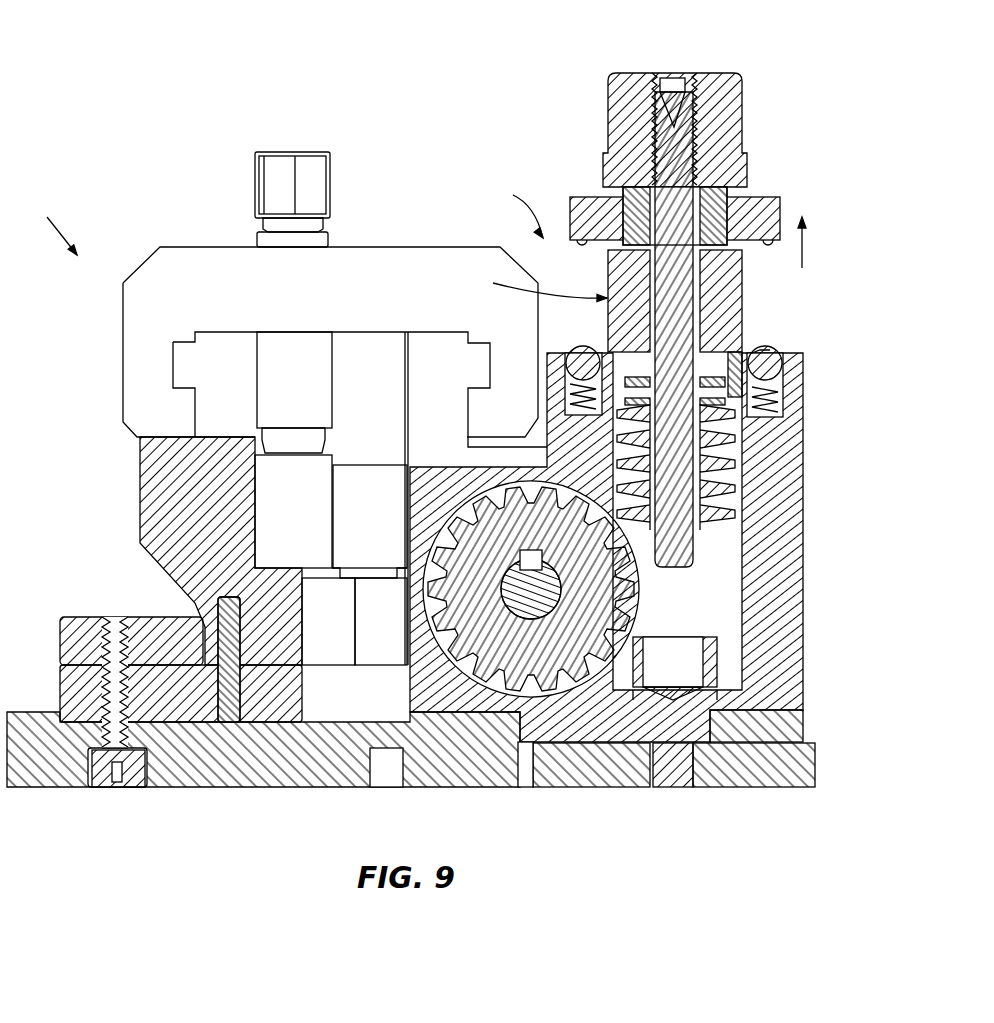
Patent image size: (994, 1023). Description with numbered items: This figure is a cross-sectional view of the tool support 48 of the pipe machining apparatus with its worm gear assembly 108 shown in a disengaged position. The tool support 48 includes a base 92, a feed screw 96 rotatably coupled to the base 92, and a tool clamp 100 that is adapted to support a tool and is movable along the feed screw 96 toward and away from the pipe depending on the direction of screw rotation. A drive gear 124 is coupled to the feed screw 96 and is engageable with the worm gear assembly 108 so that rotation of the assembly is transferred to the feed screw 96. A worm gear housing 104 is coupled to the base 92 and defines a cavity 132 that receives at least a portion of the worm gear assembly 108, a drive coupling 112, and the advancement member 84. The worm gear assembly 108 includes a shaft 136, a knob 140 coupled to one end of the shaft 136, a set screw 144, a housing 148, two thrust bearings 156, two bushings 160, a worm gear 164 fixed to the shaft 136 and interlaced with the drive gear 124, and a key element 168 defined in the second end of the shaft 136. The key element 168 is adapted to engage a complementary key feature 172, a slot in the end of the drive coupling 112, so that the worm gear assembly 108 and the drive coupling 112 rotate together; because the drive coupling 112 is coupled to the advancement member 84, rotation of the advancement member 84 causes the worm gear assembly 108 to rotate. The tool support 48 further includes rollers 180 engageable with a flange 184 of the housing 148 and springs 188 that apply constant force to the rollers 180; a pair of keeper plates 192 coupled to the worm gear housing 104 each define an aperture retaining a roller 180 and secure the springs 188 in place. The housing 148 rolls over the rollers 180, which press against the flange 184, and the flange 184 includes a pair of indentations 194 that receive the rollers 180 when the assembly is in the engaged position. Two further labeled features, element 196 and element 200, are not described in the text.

The tool support 48 is at (54, 222).
The tool clamp 100 is at (285, 360).
The base 92 is at (185, 773).
The feed screw 96 is at (503, 600).
The drive gear 124 is at (553, 690).
The advancement member 84 is at (753, 773).
The worm gear housing 104 is at (787, 680).
The drive coupling 112 is at (710, 672).
The key feature 172 is at (707, 640).
The cavity 132 is at (720, 558).
The key element 168 is at (640, 563).
The worm gear 164 is at (735, 481).
The thrust bearings 156 is at (720, 238).
The springs 188 is at (545, 398).
The keeper plates 192 is at (545, 367).
The rollers 180 is at (590, 353).
The detent recess 200 is at (773, 350).
The bushings 160 is at (645, 268).
The shaft 136 is at (678, 283).
The indentations 194 is at (573, 243).
The flange 184 is at (758, 197).
The knob 140 is at (730, 87).
The set screw 144 is at (673, 82).
The worm gear assembly 108 is at (515, 205).
The bearing surface 196 is at (608, 240).
The housing 148 is at (531, 284).